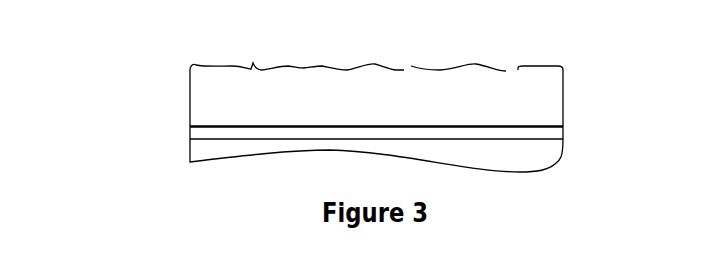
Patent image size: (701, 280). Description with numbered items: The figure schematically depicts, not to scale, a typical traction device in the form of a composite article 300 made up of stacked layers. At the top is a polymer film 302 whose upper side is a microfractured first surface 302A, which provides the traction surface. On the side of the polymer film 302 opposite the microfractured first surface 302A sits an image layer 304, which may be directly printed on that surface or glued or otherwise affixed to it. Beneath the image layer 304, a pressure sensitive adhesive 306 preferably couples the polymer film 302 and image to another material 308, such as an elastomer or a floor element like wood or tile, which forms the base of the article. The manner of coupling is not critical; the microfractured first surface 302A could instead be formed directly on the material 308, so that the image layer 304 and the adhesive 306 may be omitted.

The composite article 300 is at (163, 82).
The polymer film 302 is at (563, 98).
The microfractured first surface 302A is at (493, 68).
The image layer 304 is at (563, 126).
The pressure sensitive adhesive 306 is at (197, 133).
The material 308 is at (557, 150).